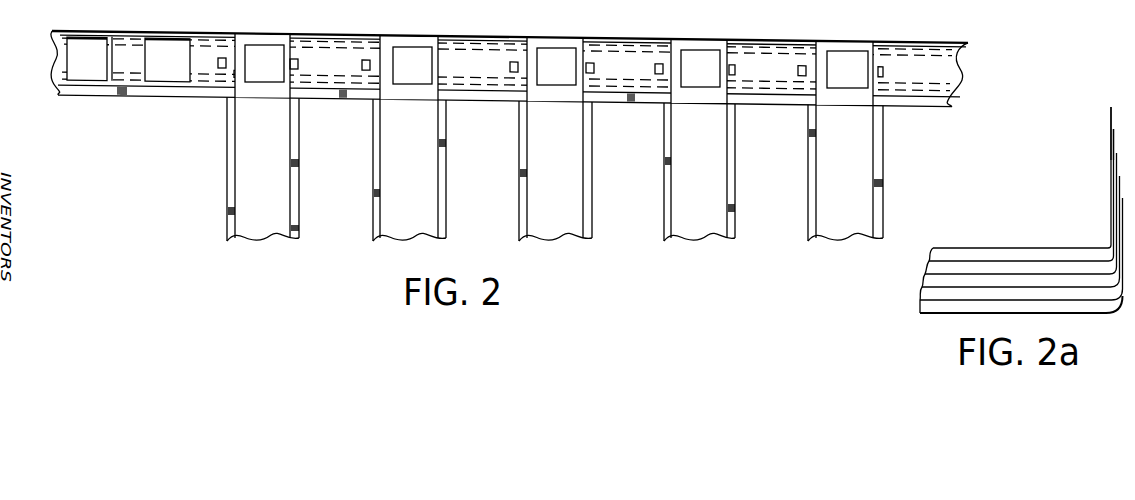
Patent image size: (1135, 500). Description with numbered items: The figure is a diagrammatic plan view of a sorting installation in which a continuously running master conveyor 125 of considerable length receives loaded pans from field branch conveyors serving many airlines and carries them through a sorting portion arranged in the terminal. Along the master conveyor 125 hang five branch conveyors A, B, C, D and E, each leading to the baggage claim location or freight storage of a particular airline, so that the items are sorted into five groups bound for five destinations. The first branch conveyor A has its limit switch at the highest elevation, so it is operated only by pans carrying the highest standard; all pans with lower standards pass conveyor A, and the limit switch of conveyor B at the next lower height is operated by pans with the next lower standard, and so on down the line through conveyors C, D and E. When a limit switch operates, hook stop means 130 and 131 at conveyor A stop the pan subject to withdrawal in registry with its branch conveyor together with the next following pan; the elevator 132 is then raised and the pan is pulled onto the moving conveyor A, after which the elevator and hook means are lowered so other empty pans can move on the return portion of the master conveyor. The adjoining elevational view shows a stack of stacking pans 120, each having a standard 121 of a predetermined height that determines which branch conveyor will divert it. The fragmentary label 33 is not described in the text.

In FIG. 2, the master conveyor 125 is at (57, 66).
In FIG. 2, the stop means 130 is at (296, 60).
In FIG. 2, the stop means 131 is at (222, 57).
In FIG. 2, the elevator 132 is at (258, 73).
In FIG. 2, the first branch conveyor A is at (232, 201).
In FIG. 2, the branch conveyor B is at (379, 206).
In FIG. 2, the branch conveyor C is at (526, 206).
In FIG. 2, the branch conveyor D is at (670, 208).
In FIG. 2, the branch conveyor E is at (815, 208).
In FIG. 2, the element 33 is at (866, 0).
In FIG. 2a, the stacking pan 120 is at (994, 247).
In FIG. 2a, the standard 121 is at (1111, 164).